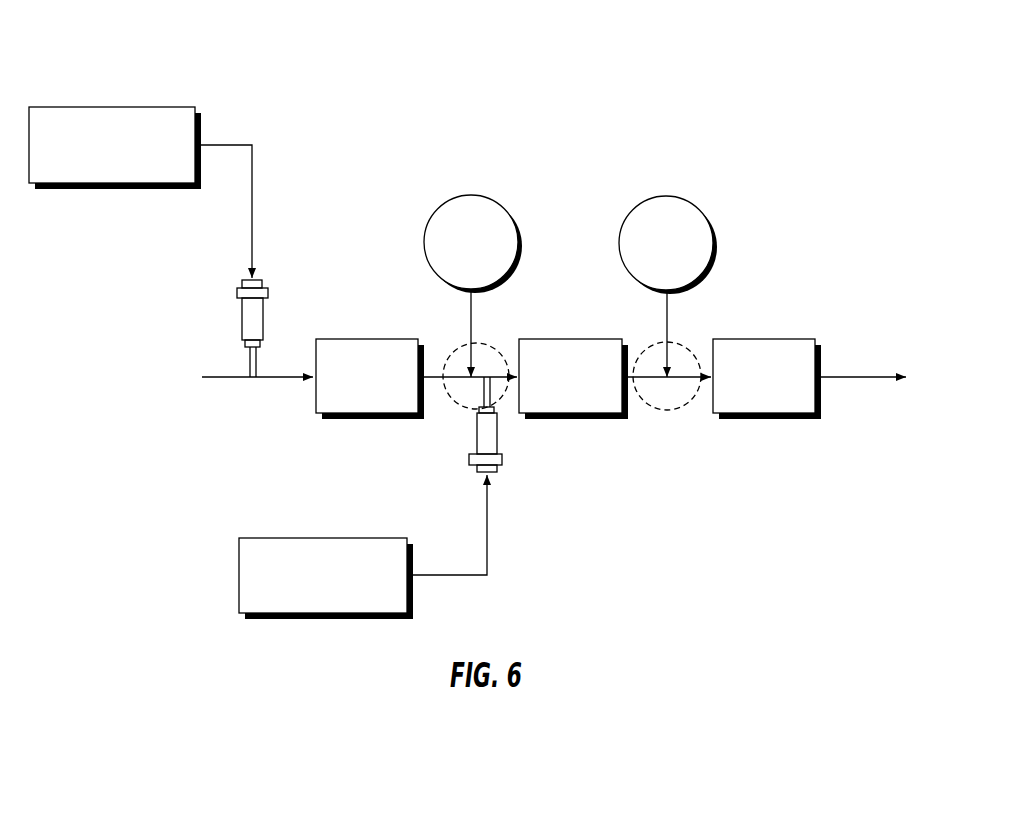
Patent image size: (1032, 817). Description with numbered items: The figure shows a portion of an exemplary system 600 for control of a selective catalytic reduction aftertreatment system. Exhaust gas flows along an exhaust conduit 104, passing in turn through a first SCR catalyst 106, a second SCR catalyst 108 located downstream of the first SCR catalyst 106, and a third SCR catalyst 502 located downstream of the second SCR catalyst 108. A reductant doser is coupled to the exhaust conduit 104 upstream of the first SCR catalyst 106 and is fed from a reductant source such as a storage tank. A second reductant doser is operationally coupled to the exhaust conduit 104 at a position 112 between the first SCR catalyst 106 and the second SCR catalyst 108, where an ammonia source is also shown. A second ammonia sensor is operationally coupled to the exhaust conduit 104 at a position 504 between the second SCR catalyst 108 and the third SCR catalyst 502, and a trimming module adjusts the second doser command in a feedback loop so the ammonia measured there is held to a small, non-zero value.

The system 600 is at (823, 93).
The exhaust conduit 104 is at (228, 377).
The first SCR catalyst 106 is at (368, 338).
The second SCR catalyst 108 is at (572, 338).
The first exhaust gas position 112 is at (463, 345).
The third SCR catalyst 502 is at (765, 338).
The position 504 is at (667, 410).